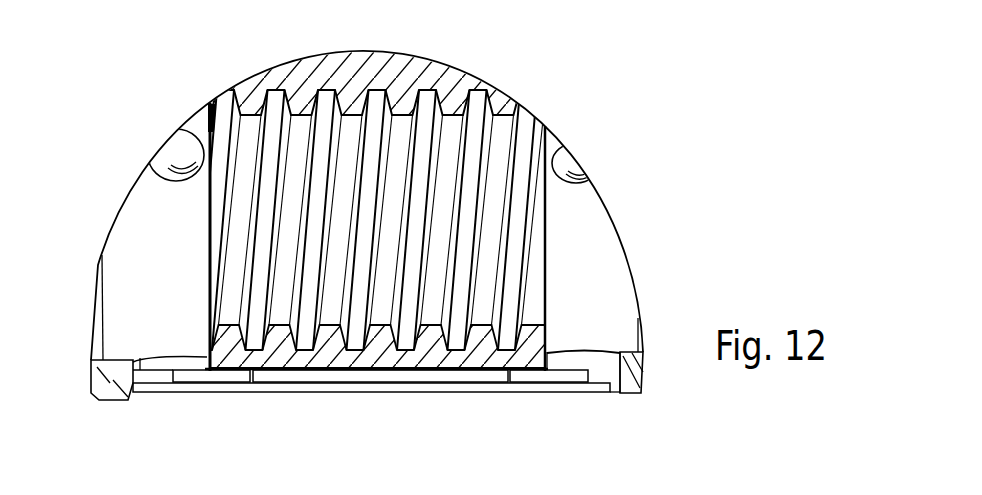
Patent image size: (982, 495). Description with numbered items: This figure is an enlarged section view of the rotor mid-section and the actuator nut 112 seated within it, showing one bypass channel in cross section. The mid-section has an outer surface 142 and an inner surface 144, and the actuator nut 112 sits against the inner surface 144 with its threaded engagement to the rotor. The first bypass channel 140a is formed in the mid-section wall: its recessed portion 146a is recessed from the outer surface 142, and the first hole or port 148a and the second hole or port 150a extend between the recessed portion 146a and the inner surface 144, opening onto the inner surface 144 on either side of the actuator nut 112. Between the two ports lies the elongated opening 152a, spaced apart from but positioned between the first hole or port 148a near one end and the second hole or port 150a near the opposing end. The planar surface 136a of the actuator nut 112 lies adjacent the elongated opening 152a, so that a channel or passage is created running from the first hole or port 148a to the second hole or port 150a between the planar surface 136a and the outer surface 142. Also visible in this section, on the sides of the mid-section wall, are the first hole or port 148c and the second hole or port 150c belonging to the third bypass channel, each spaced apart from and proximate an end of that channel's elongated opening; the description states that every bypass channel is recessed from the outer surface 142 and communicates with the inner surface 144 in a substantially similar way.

The actuator nut 112 is at (407, 78).
The planar surface 136a is at (350, 375).
The first bypass channel 140a is at (405, 401).
The outer surface 142 is at (120, 400).
The inner surface 144 is at (638, 335).
The recessed portion 146a is at (218, 393).
The first hole or port 148a is at (630, 372).
The first hole or port 148c is at (566, 172).
The second hole or port 150a is at (145, 368).
The second hole or port 150c is at (162, 184).
The elongated opening 152a is at (473, 380).